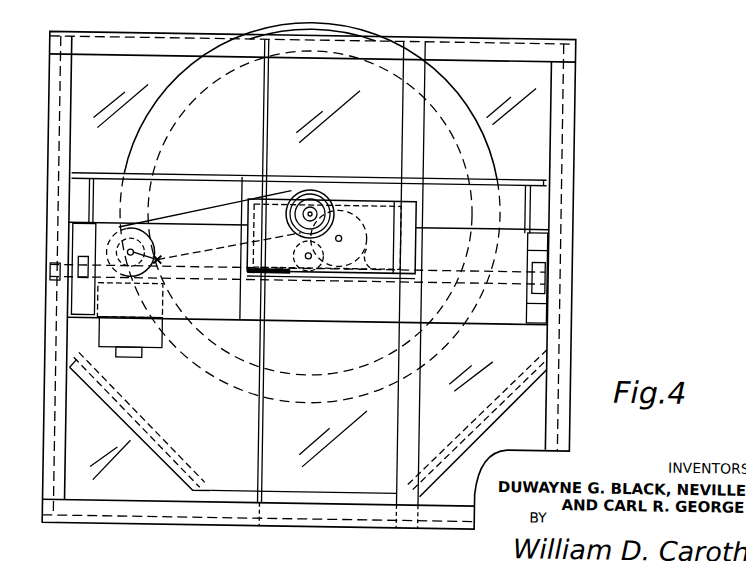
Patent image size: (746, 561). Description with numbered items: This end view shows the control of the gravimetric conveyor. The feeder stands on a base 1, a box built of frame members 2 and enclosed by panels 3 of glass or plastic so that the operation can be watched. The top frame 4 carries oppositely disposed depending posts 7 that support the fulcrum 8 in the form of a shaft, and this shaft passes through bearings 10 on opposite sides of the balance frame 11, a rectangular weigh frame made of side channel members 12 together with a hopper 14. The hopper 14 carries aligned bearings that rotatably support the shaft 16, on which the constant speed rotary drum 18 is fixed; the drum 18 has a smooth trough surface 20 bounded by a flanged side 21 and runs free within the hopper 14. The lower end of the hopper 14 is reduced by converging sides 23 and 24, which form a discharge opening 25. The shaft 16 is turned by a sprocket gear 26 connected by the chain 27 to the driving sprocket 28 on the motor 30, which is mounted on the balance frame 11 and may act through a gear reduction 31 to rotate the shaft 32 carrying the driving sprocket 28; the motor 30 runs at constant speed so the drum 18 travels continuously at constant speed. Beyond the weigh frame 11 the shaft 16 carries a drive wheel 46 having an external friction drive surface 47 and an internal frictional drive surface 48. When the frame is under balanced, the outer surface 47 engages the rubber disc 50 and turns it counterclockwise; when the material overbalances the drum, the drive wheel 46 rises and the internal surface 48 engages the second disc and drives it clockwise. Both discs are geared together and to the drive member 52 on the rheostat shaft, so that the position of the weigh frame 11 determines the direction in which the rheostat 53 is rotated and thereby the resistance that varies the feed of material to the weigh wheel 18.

The base 1 is at (147, 515).
The frame members 2 is at (50, 81).
The panels 3 is at (130, 78).
The top frame 4 is at (145, 36).
The depending posts 7 is at (61, 156).
The fulcrum 8 is at (482, 285).
The bearings 10 is at (80, 287).
The balance frame 11 is at (543, 243).
The side channel members 12 is at (92, 243).
The hopper 14 is at (155, 416).
The shaft 16 is at (249, 240).
The rotary drum 18 is at (375, 17).
The trough surface 20 is at (447, 90).
The flanged side 21 is at (288, 28).
The converging side 23 is at (497, 427).
The converging side 24 is at (176, 478).
The discharge opening 25 is at (299, 492).
The sprocket gear 26 is at (301, 188).
The chain 27 is at (186, 218).
The driving sprocket 28 is at (107, 228).
The motor 30 is at (152, 364).
The gear reduction 31 is at (251, 218).
The shaft 32 is at (128, 256).
The drive wheel 46 is at (317, 192).
The external friction drive surface 47 is at (333, 184).
The internal frictional drive surface 48 is at (357, 213).
The rubber disc 50 is at (286, 278).
The drive member 52 is at (333, 278).
The rheostat 53 is at (378, 278).